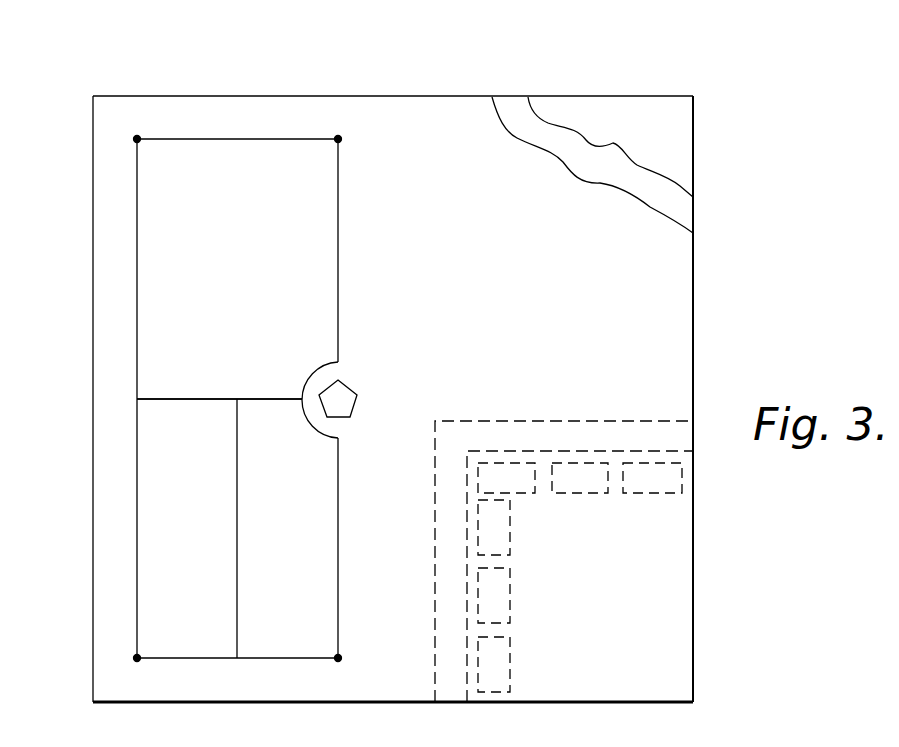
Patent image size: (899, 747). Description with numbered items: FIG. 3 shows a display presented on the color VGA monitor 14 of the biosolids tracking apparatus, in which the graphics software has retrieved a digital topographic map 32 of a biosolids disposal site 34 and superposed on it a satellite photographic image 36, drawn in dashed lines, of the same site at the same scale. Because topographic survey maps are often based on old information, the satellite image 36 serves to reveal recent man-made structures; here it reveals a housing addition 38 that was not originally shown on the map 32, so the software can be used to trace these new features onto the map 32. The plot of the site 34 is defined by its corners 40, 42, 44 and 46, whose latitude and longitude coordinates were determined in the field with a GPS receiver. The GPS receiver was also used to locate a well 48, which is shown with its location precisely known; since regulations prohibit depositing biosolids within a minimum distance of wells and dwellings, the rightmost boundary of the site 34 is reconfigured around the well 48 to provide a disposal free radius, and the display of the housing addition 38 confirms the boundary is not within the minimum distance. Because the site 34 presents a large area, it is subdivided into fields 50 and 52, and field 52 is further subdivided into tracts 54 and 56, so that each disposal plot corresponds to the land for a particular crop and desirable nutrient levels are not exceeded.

The color VGA monitor 14 is at (615, 107).
The digital topographic map 32 is at (193, 139).
The site 34 is at (632, 352).
The satellite photographic image 36 is at (657, 633).
The housing addition 38 is at (658, 563).
The corner 40 is at (136, 139).
The corner 42 is at (338, 139).
The corner 44 is at (136, 658).
The corner 46 is at (337, 658).
The well 48 is at (343, 395).
The field 50 is at (148, 366).
The field 52 is at (148, 525).
The tract 54 is at (193, 413).
The tract 56 is at (272, 413).